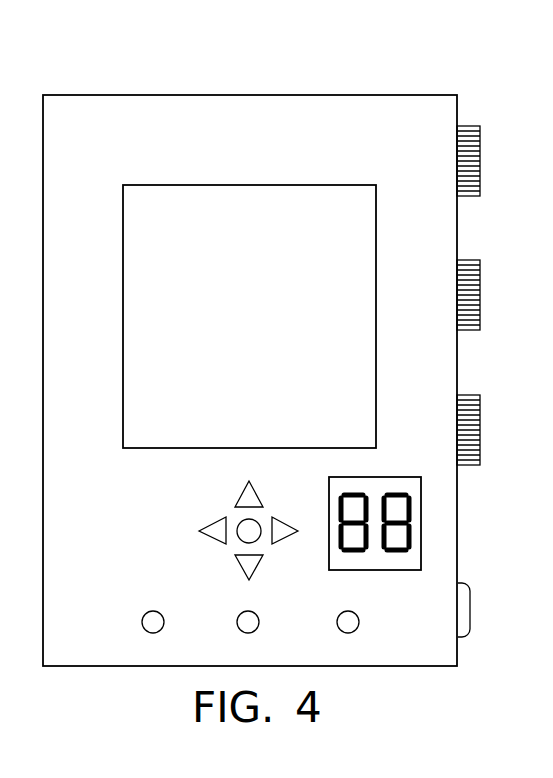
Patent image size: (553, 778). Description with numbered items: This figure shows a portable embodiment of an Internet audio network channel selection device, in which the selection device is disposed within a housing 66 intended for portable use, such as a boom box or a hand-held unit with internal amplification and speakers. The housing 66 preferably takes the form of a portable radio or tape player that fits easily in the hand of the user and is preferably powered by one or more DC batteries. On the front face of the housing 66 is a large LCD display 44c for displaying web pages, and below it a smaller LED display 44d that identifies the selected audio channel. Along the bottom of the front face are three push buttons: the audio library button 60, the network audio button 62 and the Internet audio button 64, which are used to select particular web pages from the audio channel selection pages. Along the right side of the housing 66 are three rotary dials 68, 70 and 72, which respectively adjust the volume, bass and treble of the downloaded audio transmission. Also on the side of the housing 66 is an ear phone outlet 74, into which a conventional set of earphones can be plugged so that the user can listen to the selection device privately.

The housing 66 is at (132, 78).
The LCD display 44c is at (173, 293).
The LED display 44d is at (373, 561).
The rotary dial 68 is at (480, 160).
The rotary dial 70 is at (480, 297).
The rotary dial 72 is at (482, 428).
The ear phone outlet 74 is at (470, 608).
The audio library button 60 is at (143, 621).
The network audio button 62 is at (240, 630).
The Internet audio button 64 is at (340, 631).